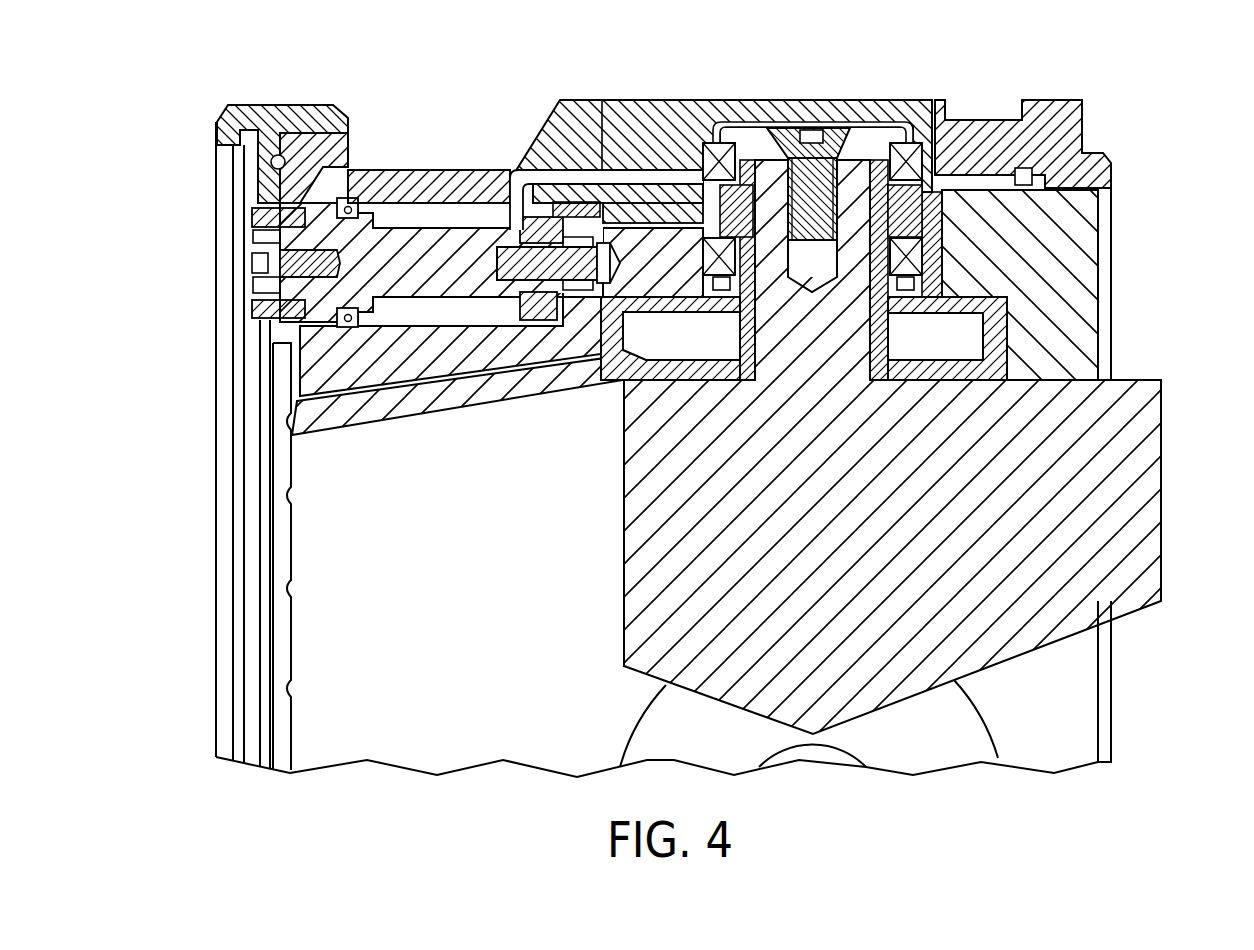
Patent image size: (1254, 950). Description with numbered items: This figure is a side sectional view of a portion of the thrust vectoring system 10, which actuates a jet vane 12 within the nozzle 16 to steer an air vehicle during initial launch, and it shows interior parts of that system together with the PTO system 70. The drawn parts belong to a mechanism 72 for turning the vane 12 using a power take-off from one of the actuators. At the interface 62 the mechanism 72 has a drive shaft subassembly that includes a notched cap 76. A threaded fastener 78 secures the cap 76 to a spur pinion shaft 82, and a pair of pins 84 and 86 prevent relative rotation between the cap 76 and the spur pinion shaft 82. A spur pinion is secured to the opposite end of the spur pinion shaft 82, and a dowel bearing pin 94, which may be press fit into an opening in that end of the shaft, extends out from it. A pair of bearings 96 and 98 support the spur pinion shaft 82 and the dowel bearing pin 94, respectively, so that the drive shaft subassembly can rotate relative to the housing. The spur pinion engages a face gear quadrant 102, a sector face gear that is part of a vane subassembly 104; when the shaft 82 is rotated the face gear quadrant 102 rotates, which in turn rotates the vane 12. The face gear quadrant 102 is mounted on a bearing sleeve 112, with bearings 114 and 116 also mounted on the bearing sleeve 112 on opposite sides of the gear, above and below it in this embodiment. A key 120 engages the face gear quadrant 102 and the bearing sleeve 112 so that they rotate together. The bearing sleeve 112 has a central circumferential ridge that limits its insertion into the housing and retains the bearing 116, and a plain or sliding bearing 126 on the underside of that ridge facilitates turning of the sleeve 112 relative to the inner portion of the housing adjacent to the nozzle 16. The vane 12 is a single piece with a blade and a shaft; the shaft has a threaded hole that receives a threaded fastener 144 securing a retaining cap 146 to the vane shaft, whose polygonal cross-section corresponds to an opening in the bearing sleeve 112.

The thrust vectoring system 10 is at (1137, 278).
The jet vane 12 is at (1113, 487).
The nozzle 16 is at (313, 562).
The interface 62 is at (196, 270).
The PTO system 70 is at (450, 128).
The mechanism 72 is at (859, 84).
The notched cap 76 is at (253, 288).
The threaded fastener 78 is at (253, 238).
The spur pinion shaft 82 is at (412, 256).
The pin 84 is at (253, 308).
The pin 86 is at (262, 213).
The dowel bearing pin 94 is at (510, 257).
The bearing 96 is at (348, 200).
The bearing 98 is at (583, 240).
The face gear quadrant 102 is at (643, 195).
The vane subassembly 104 is at (940, 129).
The bearing sleeve 112 is at (900, 327).
The bearing 114 is at (900, 265).
The bearing 116 is at (712, 165).
The key 120 is at (722, 240).
The plain bearing 126 is at (736, 303).
The threaded fastener 144 is at (900, 135).
The retaining cap 146 is at (815, 160).